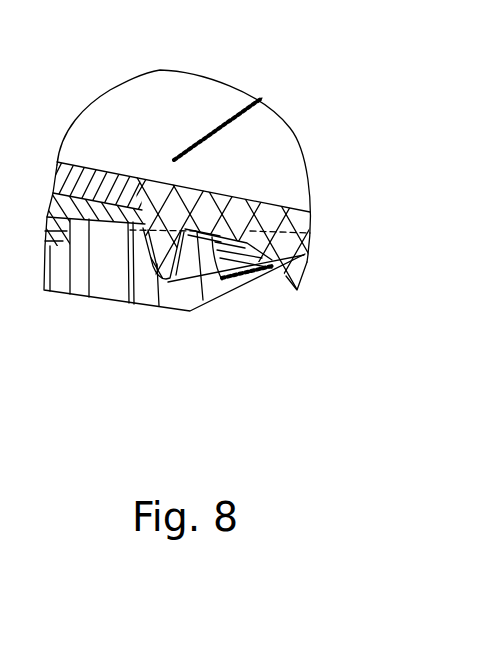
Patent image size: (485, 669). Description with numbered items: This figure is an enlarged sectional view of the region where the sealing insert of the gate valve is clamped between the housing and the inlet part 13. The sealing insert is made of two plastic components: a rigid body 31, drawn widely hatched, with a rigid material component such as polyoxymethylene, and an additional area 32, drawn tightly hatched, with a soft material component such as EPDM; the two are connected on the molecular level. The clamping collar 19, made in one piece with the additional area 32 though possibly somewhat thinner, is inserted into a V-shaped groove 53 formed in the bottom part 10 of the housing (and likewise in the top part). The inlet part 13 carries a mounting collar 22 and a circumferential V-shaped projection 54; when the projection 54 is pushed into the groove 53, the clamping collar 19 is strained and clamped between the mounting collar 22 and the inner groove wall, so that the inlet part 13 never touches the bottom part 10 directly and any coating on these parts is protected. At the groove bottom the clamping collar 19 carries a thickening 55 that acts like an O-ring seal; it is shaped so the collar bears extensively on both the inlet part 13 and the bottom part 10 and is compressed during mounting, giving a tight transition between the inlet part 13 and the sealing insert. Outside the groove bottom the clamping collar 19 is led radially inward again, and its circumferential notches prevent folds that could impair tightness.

The bottom part 10 is at (98, 280).
The inlet part 13 is at (302, 233).
The clamping collar 19 is at (143, 226).
The mounting collar 22 is at (207, 180).
The rigid body 31 is at (65, 290).
The additional area 32 is at (128, 292).
The V-shaped groove 53 is at (188, 312).
The projection 54 is at (200, 193).
The thickening 55 is at (243, 291).